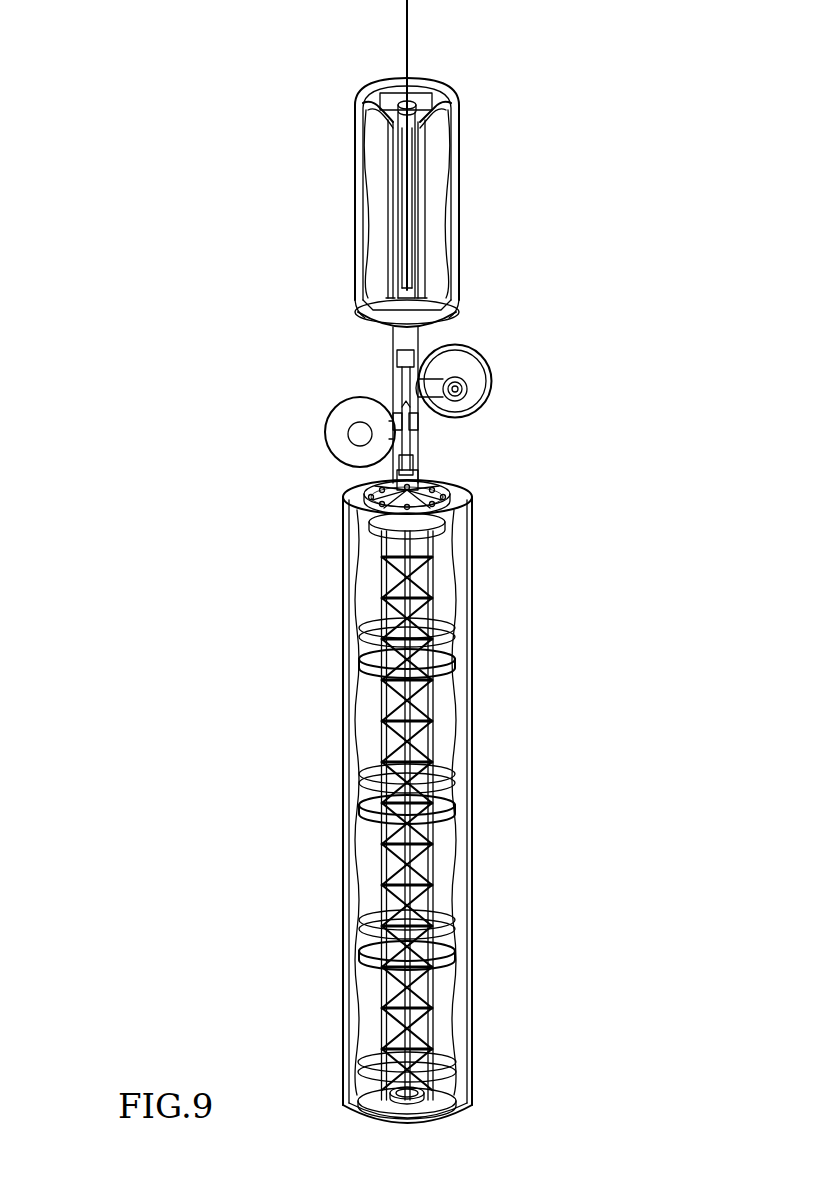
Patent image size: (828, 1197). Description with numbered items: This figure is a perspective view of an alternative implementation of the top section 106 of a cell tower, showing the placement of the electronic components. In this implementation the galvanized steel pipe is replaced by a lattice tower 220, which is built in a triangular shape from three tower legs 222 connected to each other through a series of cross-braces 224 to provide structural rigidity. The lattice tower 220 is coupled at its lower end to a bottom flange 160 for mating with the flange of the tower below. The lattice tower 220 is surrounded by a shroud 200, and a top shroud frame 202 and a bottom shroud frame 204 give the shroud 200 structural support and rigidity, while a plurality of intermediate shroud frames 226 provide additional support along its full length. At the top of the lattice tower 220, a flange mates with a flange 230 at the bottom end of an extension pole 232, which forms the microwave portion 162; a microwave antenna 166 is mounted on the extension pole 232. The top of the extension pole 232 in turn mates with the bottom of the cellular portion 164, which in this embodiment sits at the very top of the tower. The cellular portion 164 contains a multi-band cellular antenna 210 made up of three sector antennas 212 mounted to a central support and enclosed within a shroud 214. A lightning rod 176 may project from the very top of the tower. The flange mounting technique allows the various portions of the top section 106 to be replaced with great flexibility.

The top section 106 is at (258, 831).
The bottom flange 160 is at (422, 1106).
The microwave portion 162 is at (290, 385).
The cellular portion 164 is at (268, 206).
The microwave antenna 166 is at (492, 378).
The lightning rod 176 is at (410, 46).
The shroud 200 is at (470, 560).
The top shroud frame 202 is at (384, 528).
The bottom shroud frame 204 is at (400, 1113).
The multi-band cellular antenna 210 is at (348, 274).
The sector antenna 212 is at (426, 92).
The shroud 214 is at (370, 175).
The lattice tower 220 is at (372, 866).
The tower leg 222 is at (386, 752).
The cross-brace 224 is at (424, 750).
The intermediate shroud frame 226 is at (373, 672).
The flange 230 is at (447, 487).
The extension pole 232 is at (396, 347).